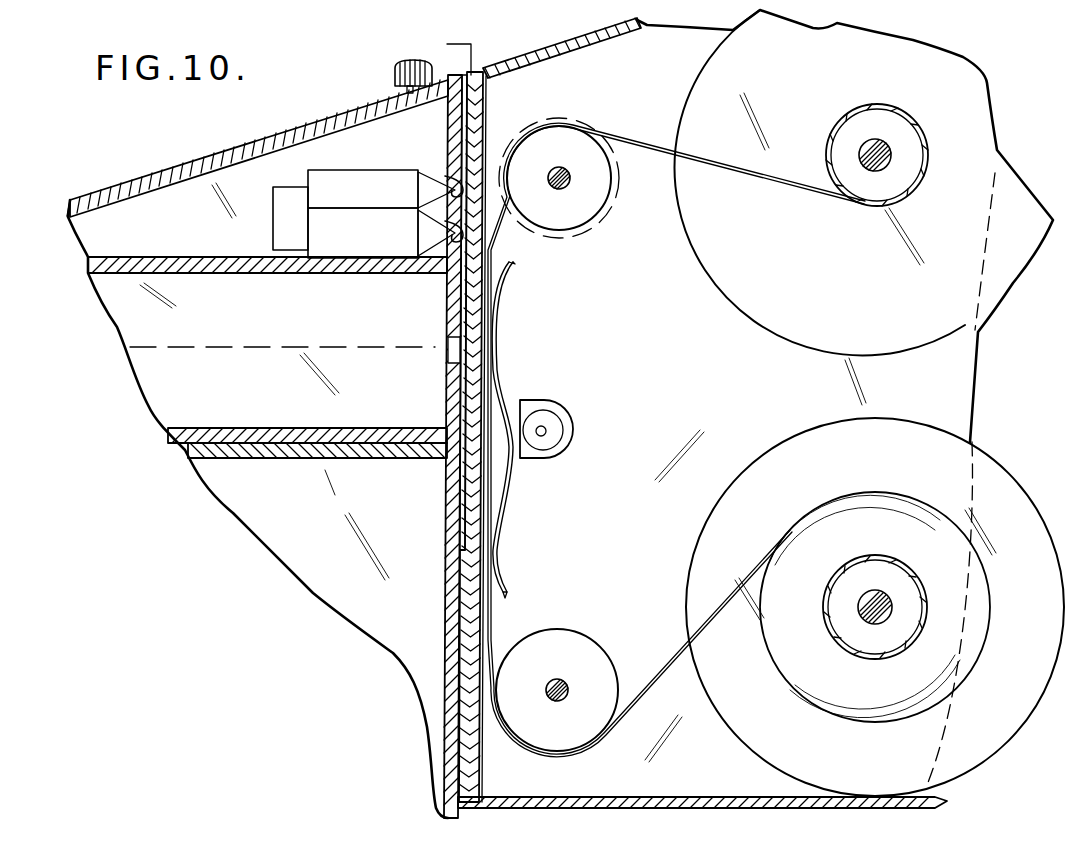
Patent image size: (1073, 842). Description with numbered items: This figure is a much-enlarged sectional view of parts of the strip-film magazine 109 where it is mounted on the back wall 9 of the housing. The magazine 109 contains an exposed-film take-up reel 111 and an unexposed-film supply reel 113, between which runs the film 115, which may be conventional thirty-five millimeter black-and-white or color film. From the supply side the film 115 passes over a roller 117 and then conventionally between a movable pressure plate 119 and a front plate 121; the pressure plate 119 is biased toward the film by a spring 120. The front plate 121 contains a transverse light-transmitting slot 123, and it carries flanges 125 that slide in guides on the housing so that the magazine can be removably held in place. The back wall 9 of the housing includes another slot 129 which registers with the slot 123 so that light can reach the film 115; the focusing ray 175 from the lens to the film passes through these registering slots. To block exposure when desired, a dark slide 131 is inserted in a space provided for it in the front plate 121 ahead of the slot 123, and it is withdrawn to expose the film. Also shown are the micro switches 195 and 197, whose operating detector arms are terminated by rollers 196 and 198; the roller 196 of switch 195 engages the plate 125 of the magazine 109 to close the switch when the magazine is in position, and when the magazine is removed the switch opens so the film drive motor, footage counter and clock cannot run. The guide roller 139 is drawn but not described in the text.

The back wall 9 is at (457, 585).
The strip-film magazine 109 is at (738, 798).
The exposed-film take-up reel 111 is at (840, 252).
The unexposed-film supply reel 113 is at (925, 468).
The film 115 is at (662, 153).
The roller 117 is at (582, 638).
The movable pressure plate 119 is at (490, 600).
The spring 120 is at (505, 515).
The front plate 121 is at (462, 472).
The transverse light-transmitting slot 123 is at (482, 352).
The flanges 125 is at (463, 137).
The slot 129 is at (452, 350).
The dark slide 131 is at (473, 52).
The guide roller 139 is at (587, 203).
The focusing ray 175 is at (274, 348).
The micro switch 195 is at (395, 199).
The roller 196 is at (458, 182).
The micro switch 197 is at (358, 245).
The roller 198 is at (447, 275).